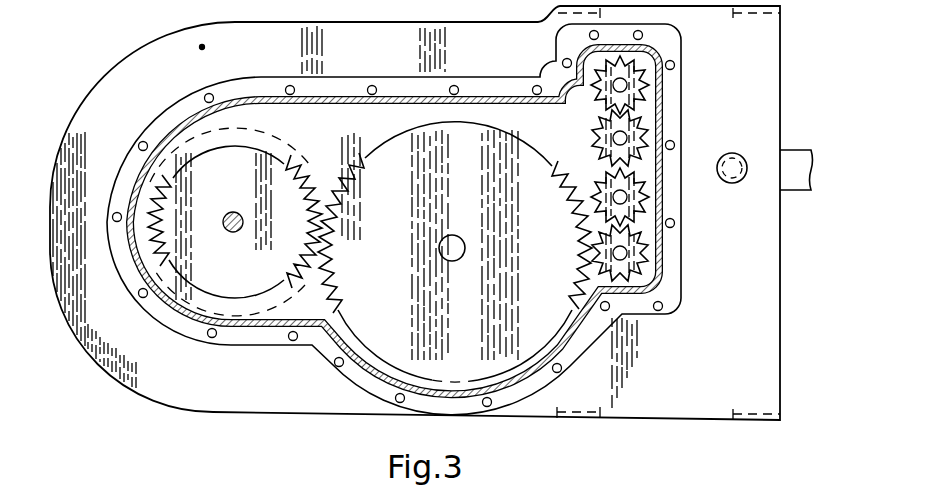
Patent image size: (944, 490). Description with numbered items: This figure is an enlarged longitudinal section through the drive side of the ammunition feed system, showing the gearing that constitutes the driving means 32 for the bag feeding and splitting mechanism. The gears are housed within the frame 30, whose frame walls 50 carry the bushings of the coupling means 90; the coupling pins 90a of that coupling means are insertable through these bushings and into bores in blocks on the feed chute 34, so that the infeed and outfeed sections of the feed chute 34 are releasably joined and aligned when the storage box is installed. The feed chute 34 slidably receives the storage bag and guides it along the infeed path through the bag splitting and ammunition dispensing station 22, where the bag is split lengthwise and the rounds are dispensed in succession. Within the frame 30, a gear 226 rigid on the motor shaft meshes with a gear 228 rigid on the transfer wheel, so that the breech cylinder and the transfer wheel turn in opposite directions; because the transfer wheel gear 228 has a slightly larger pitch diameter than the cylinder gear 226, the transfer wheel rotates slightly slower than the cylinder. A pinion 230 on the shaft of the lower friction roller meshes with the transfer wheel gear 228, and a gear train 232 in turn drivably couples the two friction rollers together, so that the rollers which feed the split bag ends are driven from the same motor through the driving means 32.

The frame 30 is at (361, 21).
The frame walls 50 is at (447, 32).
The bag splitting and ammunition dispensing station 22 is at (541, 8).
The driving means 32 is at (298, 303).
The gear 226 is at (197, 278).
The gear 228 is at (373, 333).
The gear train 232 is at (645, 103).
The pinion 230 is at (647, 262).
The coupling means 90 is at (733, 189).
The coupling pins 90a is at (750, 140).
The feed chute 34 is at (794, 149).